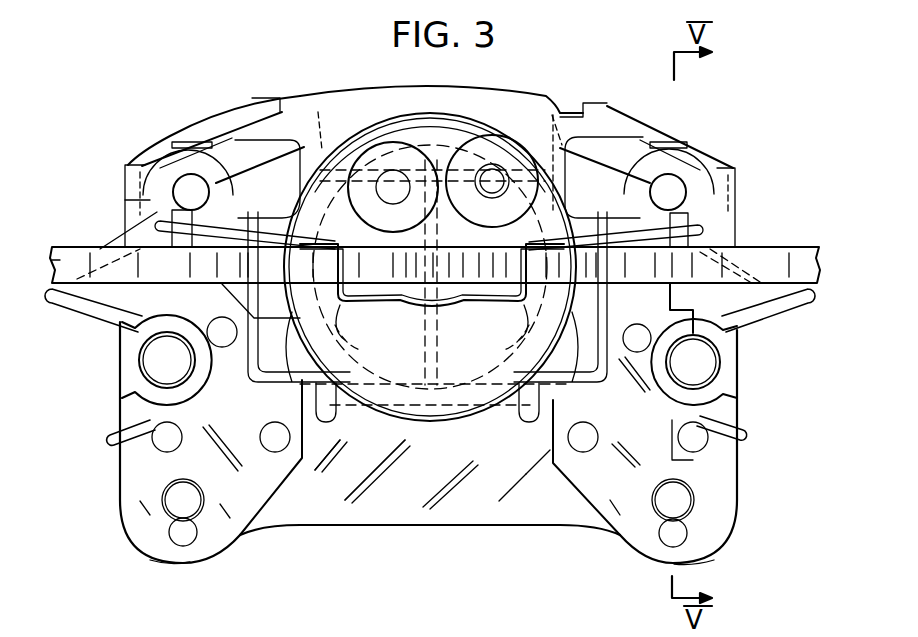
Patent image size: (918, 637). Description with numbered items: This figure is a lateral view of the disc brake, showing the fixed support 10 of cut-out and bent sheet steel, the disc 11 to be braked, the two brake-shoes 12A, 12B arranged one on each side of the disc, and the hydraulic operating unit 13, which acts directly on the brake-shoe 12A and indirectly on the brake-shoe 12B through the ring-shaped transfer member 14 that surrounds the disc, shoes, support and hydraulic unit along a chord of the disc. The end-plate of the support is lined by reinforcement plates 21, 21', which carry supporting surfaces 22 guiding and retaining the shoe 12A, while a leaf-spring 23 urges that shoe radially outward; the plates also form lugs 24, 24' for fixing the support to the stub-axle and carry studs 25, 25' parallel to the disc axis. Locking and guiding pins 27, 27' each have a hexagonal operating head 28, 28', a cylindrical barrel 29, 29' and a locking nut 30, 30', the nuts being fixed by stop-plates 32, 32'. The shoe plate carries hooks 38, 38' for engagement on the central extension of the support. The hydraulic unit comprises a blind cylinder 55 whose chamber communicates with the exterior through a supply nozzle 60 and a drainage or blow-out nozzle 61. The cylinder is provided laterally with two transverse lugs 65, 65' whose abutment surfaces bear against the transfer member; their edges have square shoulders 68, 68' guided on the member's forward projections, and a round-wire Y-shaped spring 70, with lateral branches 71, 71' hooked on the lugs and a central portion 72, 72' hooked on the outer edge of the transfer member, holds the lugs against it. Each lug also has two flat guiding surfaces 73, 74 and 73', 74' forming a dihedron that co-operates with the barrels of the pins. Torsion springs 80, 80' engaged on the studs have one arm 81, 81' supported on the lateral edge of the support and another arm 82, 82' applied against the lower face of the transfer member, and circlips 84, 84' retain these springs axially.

The fixed support 10 is at (548, 98).
The disc 11 is at (41, 318).
The brake-shoe 12A is at (536, 405).
The brake-shoe 12B is at (246, 104).
The hydraulic operating unit 13 is at (363, 116).
The transfer member 14 is at (65, 203).
The reinforcement plate 21 is at (672, 443).
The reinforcement plate 21' is at (181, 440).
The supporting surfaces 22 is at (556, 405).
The leaf-spring 23 is at (342, 426).
The lug 24 is at (721, 566).
The lug 24' is at (147, 579).
The stud 25 is at (721, 363).
The stud 25' is at (134, 360).
The locking and guiding pin 27 is at (696, 152).
The locking and guiding pin 27' is at (169, 148).
The hexagonal operating head 28 is at (743, 203).
The hexagonal operating head 28' is at (115, 179).
The cylindrical barrel 29 is at (668, 154).
The cylindrical barrel 29' is at (197, 151).
The locking nut 30 is at (694, 181).
The locking nut 30' is at (170, 175).
The stop-plate 32 is at (435, 247).
The stop-plate 32' is at (101, 240).
The hook 38 is at (646, 132).
The hook 38' is at (223, 125).
The blind cylinder 55 is at (458, 420).
The supply nozzle 60 is at (393, 180).
The drainage or blow-out nozzle 61 is at (492, 175).
The transverse lug 65 is at (568, 126).
The transverse lug 65' is at (312, 110).
The square shoulder 68 is at (665, 308).
The square shoulder 68' is at (238, 301).
The spring 70 is at (413, 311).
The lateral branch 71 is at (541, 317).
The lateral branch 71' is at (325, 318).
The central portion 72 is at (507, 341).
The central portion 72' is at (360, 341).
The flat guiding surface 73 is at (639, 177).
The flat guiding surface 73' is at (221, 179).
The flat guiding surface 74 is at (656, 221).
The flat guiding surface 74' is at (208, 220).
The torsion spring 80 is at (750, 454).
The torsion spring 80' is at (104, 454).
The arm 81 is at (745, 423).
The arm 81' is at (115, 421).
The arm 82 is at (768, 322).
The arm 82' is at (93, 319).
The circlip 84 is at (678, 377).
The circlip 84' is at (179, 371).